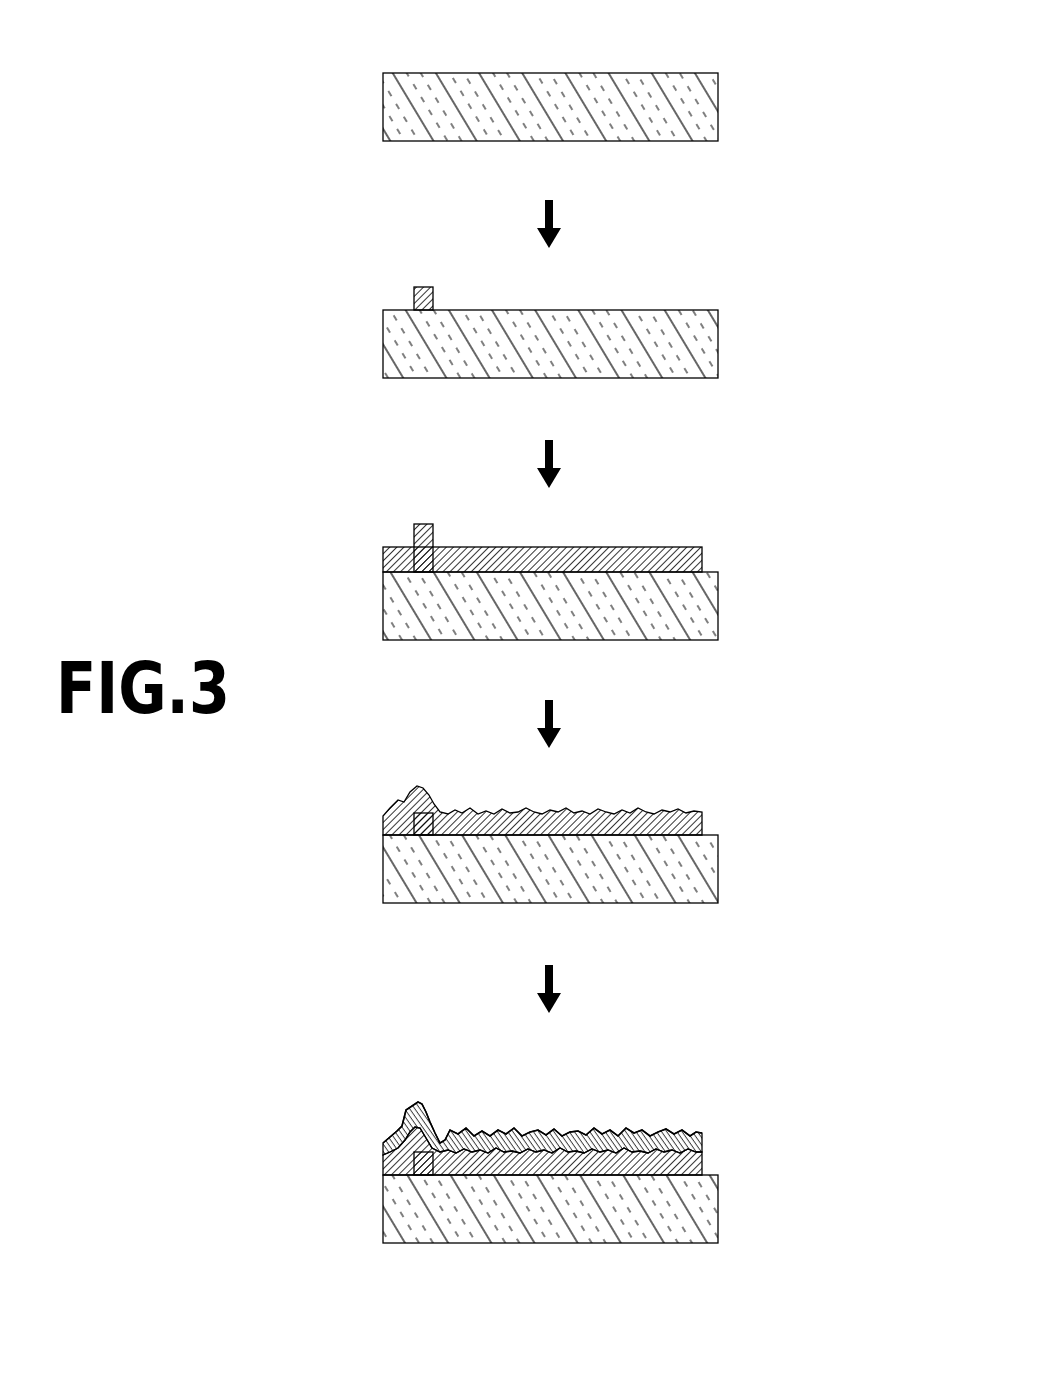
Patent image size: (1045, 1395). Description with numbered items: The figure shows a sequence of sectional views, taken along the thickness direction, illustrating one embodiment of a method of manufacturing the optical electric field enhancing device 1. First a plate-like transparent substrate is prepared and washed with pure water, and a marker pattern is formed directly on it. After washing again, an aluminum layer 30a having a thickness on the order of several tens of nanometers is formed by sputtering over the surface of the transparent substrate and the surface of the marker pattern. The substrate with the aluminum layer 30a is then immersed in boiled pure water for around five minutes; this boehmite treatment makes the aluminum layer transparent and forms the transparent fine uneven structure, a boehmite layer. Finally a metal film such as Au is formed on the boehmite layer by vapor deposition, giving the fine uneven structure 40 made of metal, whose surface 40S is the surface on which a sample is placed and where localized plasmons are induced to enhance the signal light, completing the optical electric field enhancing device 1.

The optical electric field enhancing device 1 is at (710, 1049).
The aluminum layer 30a is at (472, 547).
The fine uneven structure 40 is at (388, 1145).
The surface 40S is at (625, 1130).